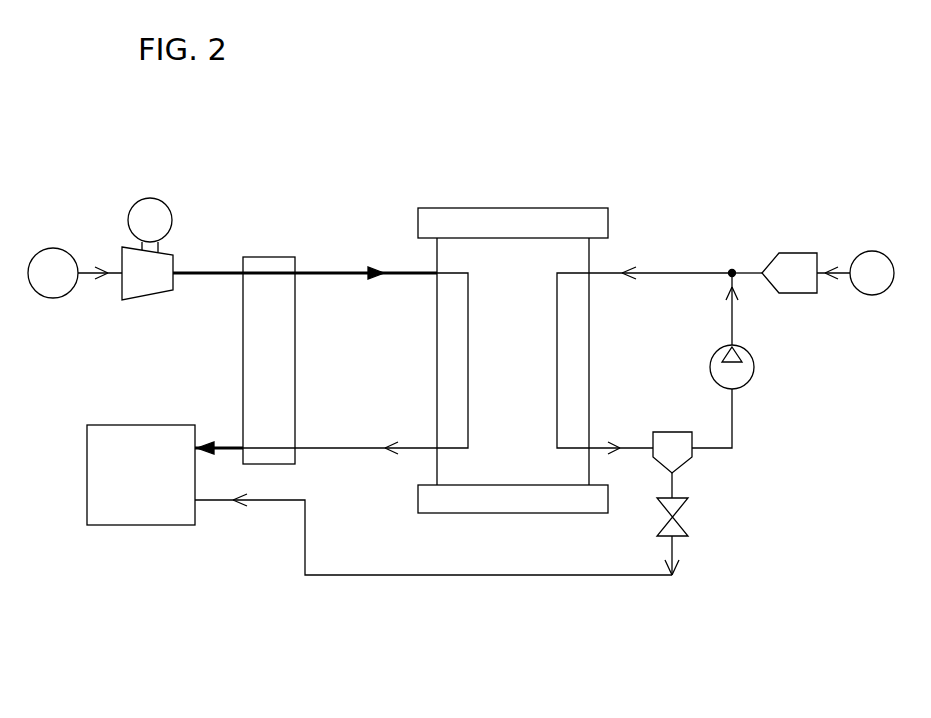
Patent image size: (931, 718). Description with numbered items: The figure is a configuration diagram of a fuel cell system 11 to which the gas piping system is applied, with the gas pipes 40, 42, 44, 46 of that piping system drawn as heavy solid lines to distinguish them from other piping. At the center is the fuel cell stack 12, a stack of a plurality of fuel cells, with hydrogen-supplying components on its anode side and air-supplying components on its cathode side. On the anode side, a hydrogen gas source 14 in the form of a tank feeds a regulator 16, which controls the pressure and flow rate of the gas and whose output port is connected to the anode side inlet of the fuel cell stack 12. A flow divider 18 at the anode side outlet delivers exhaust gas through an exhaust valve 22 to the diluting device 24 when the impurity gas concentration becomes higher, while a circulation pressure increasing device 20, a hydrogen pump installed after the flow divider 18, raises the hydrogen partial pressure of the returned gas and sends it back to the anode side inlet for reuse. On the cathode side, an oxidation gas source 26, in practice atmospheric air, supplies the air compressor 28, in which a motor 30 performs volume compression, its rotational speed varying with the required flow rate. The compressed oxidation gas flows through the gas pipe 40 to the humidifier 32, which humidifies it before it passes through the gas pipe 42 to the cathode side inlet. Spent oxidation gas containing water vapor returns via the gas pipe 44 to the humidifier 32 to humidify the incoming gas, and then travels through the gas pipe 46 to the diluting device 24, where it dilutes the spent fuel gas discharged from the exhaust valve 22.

The fuel cell system 11 is at (142, 602).
The fuel cell stack 12 is at (577, 195).
The hydrogen gas source 14 is at (882, 252).
The regulator 16 is at (798, 253).
The flow divider 18 is at (688, 463).
The circulation pressure increasing device 20 is at (754, 369).
The exhaust valve 22 is at (690, 517).
The diluting device 24 is at (87, 470).
The oxidation gas source 26 is at (58, 248).
The air compressor (ACP) 28 is at (175, 258).
The motor 30 is at (160, 198).
The humidifier 32 is at (275, 250).
The gas pipe 40 is at (215, 283).
The gas pipe 42 is at (340, 277).
The gas pipe 44 is at (342, 443).
The gas pipe 46 is at (222, 444).